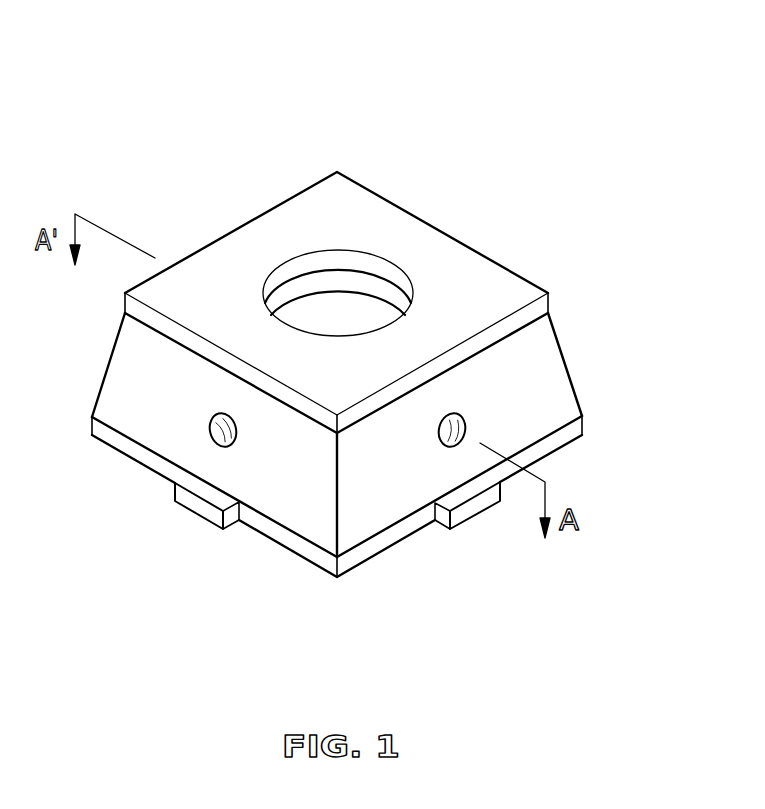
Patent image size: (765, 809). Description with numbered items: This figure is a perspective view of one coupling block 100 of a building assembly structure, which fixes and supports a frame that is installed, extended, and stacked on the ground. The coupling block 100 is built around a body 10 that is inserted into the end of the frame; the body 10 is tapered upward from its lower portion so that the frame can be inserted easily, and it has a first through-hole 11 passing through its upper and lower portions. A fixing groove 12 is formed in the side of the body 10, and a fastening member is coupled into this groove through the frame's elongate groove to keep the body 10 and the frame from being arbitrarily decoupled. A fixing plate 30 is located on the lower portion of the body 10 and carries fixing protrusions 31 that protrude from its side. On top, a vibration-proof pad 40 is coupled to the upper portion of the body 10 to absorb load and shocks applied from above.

The coupling block 100 is at (342, 318).
The vibration-proof pad 40 is at (272, 233).
The first through-hole 11 is at (347, 310).
The body 10 is at (553, 372).
The fixing groove 12 is at (212, 430).
The fixing plate 30 is at (557, 448).
The fixing protrusions 31 is at (202, 512).